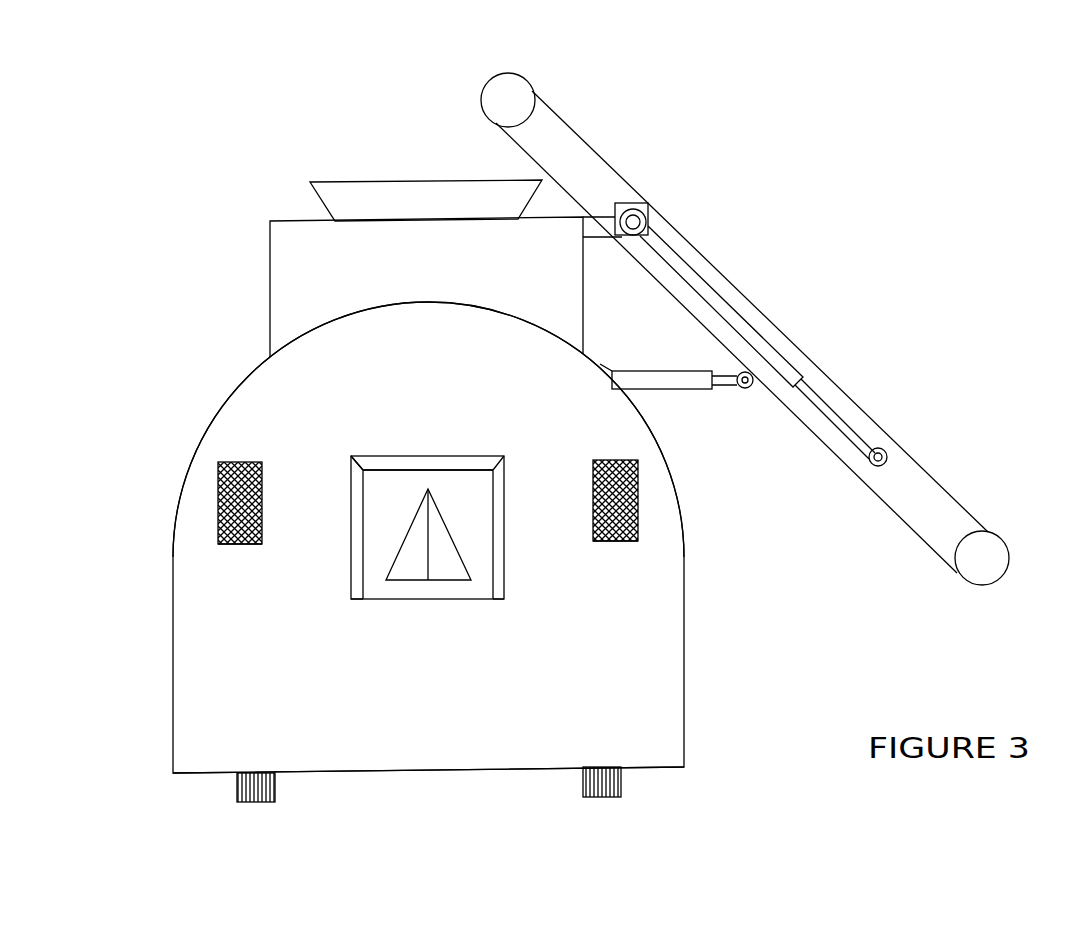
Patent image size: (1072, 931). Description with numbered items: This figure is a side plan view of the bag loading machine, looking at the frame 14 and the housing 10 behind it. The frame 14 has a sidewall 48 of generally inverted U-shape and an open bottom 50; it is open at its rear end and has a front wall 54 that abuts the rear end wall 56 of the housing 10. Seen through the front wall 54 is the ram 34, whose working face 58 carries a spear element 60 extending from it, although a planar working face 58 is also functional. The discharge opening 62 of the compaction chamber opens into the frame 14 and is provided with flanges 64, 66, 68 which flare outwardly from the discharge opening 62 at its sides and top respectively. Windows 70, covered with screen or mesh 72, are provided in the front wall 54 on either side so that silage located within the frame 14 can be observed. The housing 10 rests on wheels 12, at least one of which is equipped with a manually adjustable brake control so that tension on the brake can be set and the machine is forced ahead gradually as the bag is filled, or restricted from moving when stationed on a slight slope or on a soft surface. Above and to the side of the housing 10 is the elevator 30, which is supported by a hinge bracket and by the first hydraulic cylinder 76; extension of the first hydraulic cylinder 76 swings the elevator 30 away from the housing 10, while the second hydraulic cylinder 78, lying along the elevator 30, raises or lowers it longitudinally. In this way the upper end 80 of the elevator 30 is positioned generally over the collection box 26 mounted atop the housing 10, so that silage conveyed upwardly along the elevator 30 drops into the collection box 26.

The housing 10 is at (370, 287).
The wheels 12 is at (432, 817).
The frame 14 is at (479, 537).
The collection box 26 is at (425, 172).
The elevator 30 is at (845, 391).
The ram 34 is at (468, 527).
The sidewall 48 is at (394, 429).
The open bottom 50 is at (428, 820).
The front wall 54 is at (374, 385).
The rear end wall 56 is at (447, 277).
The working face 58 is at (326, 467).
The spear element 60 is at (399, 571).
The discharge opening 62 is at (498, 485).
The flange 64 is at (313, 604).
The flange 66 is at (551, 602).
The flange 68 is at (428, 416).
The windows 70 is at (445, 580).
The screen or mesh 72 is at (423, 486).
The first hydraulic cylinder 76 is at (680, 409).
The second hydraulic cylinder 78 is at (735, 324).
The upper end 80 is at (537, 71).